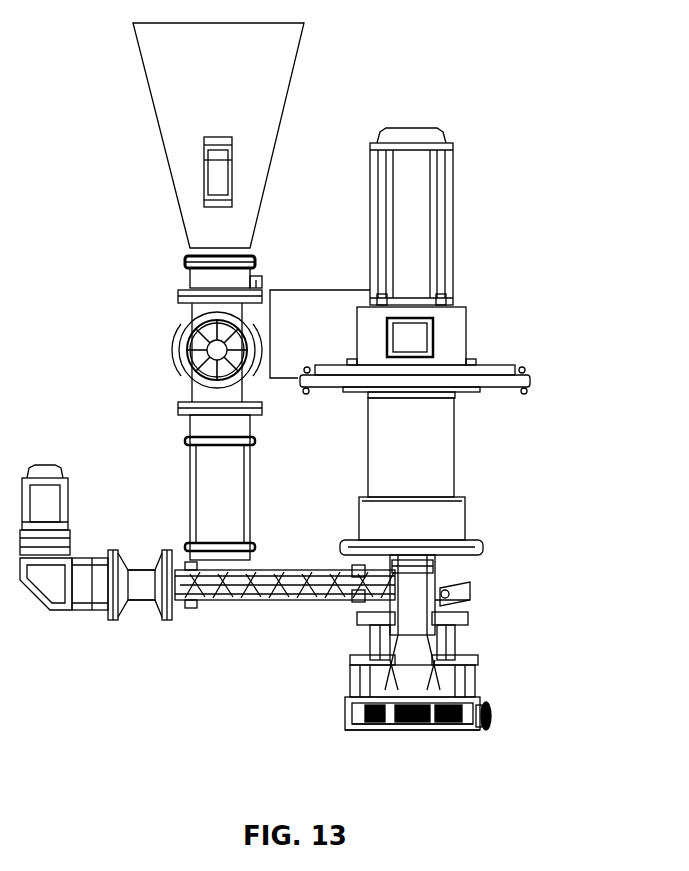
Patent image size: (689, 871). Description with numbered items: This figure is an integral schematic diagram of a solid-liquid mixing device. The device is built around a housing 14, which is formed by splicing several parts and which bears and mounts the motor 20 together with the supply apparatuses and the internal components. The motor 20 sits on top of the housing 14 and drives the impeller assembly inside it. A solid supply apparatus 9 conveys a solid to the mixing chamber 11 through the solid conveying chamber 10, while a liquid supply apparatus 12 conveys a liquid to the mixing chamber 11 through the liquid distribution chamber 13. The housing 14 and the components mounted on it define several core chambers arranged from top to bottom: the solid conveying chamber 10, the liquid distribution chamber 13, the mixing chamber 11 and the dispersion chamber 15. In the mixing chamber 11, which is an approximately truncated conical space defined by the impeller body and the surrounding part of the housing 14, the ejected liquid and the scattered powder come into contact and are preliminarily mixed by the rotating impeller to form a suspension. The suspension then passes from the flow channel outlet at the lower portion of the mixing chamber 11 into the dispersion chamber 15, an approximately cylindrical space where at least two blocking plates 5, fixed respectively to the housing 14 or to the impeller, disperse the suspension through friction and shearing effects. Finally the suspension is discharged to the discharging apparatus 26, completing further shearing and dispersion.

The blocking plates 5 is at (432, 722).
The solid supply apparatus 9 is at (242, 577).
The solid conveying chamber 10 is at (437, 608).
The mixing chamber 11 is at (440, 684).
The liquid supply apparatus 12 is at (370, 662).
The liquid distribution chamber 13 is at (370, 677).
The housing 14 is at (372, 727).
The dispersion chamber 15 is at (490, 705).
The motor 20 is at (407, 237).
The discharging apparatus 26 is at (492, 723).